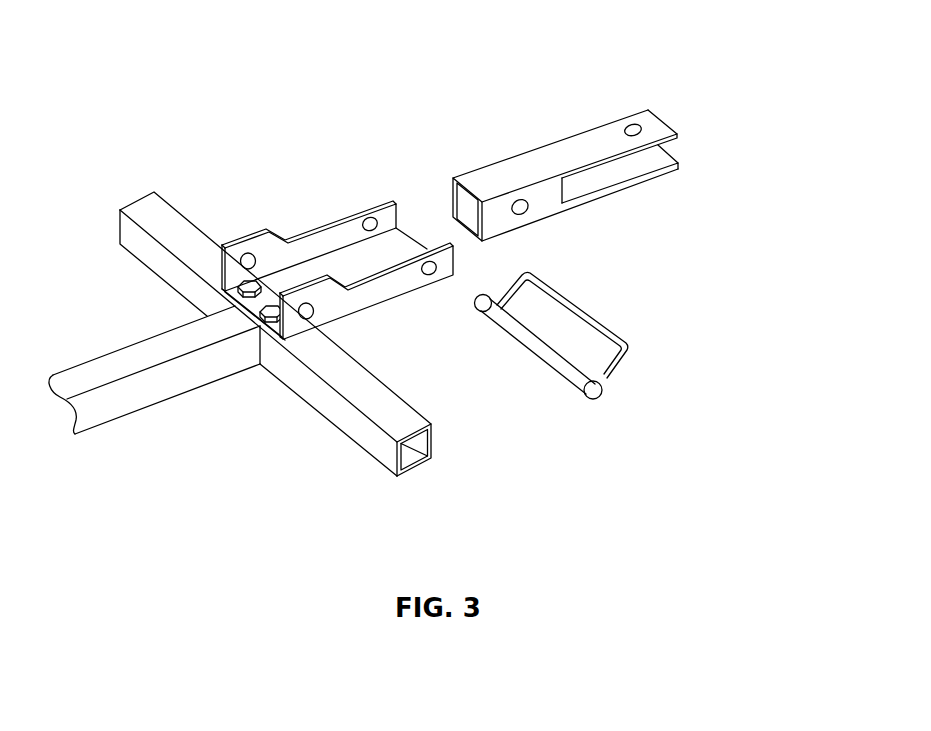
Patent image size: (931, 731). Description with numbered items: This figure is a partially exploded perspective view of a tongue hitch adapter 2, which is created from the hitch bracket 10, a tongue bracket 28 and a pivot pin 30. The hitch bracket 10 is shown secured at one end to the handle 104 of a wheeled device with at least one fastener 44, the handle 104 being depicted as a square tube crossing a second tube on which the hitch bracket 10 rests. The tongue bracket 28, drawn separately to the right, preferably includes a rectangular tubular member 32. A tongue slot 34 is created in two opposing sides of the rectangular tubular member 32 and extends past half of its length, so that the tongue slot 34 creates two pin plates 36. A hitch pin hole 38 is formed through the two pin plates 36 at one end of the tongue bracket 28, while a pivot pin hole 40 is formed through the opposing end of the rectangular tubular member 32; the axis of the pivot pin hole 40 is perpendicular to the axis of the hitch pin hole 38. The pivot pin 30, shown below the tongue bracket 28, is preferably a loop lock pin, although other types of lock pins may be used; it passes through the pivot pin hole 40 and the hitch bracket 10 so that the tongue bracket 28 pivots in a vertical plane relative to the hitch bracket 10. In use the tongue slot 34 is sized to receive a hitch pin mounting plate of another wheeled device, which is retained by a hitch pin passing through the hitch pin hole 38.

The tongue hitch adapter 2 is at (409, 156).
The hitch bracket 10 is at (325, 212).
The tongue bracket 28 is at (630, 139).
The pivot pin 30 is at (547, 360).
The rectangular tubular member 32 is at (543, 202).
The tongue slot 34 is at (667, 166).
The pin plates 36 is at (604, 127).
The hitch pin hole 38 is at (660, 117).
The pivot pin hole 40 is at (528, 212).
The fastener 44 is at (258, 281).
The handle 104 is at (152, 386).